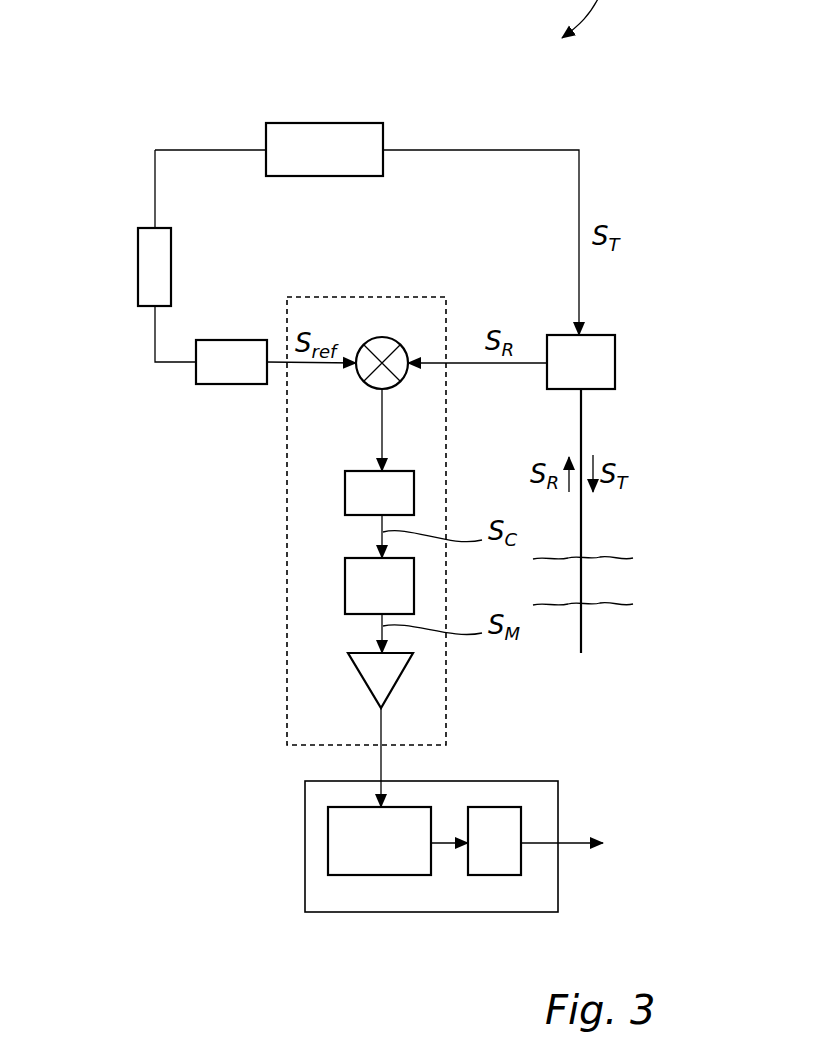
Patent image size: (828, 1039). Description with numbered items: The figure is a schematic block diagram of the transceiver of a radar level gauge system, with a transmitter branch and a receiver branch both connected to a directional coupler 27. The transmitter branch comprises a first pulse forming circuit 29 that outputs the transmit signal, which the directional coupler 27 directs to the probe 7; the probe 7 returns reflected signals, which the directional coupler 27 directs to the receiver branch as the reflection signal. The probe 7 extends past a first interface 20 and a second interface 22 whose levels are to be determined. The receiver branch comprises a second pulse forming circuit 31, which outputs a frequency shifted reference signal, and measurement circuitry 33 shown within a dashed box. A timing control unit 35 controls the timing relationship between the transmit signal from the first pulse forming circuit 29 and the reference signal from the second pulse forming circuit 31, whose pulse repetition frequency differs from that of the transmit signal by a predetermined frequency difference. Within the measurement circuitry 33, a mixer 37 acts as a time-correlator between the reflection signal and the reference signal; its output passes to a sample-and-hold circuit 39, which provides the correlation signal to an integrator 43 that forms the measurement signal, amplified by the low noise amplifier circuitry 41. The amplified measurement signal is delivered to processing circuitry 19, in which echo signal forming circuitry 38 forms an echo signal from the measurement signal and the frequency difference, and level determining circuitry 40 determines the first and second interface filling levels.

The first pulse forming circuit 29 is at (319, 123).
The timing control unit 35 is at (138, 262).
The second pulse forming circuit 31 is at (217, 384).
The mixer 37 is at (389, 337).
The measurement circuitry 33 is at (446, 398).
The directional coupler 27 is at (616, 355).
The probe 7 is at (582, 412).
The first interface 20 is at (613, 558).
The second interface 22 is at (622, 604).
The sample-and-hold circuit 39 is at (345, 493).
The integrator 43 is at (345, 585).
The amplifier circuitry 41 is at (398, 682).
The processing circuitry 19 is at (435, 912).
The echo signal forming circuitry 38 is at (358, 875).
The level determining circuitry 40 is at (497, 807).